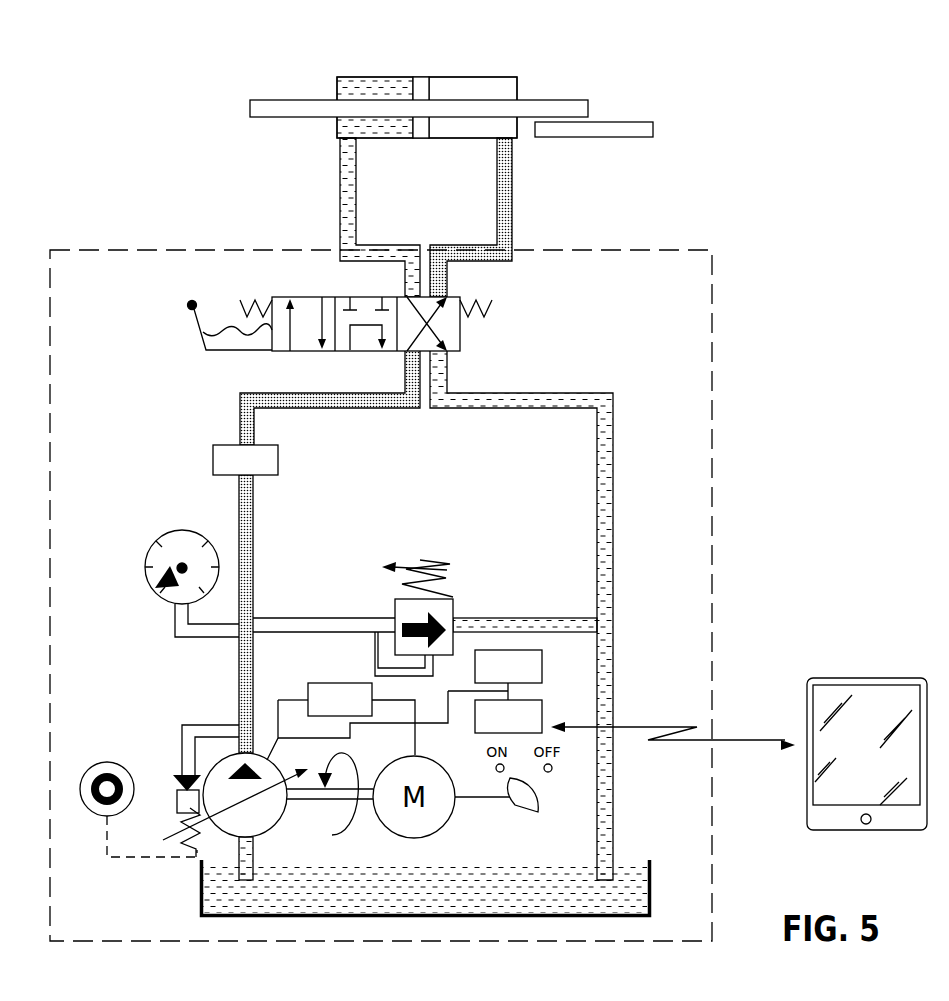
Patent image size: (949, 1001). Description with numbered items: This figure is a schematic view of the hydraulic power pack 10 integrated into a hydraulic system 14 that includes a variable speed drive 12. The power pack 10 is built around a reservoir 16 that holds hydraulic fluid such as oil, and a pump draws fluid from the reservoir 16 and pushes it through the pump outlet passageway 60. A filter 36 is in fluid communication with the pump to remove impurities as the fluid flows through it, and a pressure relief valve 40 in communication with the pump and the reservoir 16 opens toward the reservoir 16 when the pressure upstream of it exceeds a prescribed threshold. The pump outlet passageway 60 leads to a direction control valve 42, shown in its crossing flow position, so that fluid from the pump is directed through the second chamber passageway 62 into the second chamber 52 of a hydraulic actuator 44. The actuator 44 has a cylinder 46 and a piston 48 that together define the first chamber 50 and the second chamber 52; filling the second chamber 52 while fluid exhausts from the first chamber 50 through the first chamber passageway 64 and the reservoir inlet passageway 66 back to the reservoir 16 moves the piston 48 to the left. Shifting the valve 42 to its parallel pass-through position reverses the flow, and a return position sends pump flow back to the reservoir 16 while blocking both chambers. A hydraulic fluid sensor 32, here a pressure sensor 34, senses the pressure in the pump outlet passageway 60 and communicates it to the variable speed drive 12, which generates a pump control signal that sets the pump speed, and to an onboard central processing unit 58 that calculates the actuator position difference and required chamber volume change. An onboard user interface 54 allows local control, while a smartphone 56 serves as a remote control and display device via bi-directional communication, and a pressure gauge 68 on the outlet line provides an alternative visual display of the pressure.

The hydraulic power pack 10 is at (675, 247).
The variable speed drive 12 is at (337, 683).
The hydraulic system 14 is at (112, 108).
The reservoir 16 is at (437, 900).
The hydraulic fluid sensor 32 is at (130, 780).
The pressure sensor 34 is at (107, 762).
The filter 36 is at (213, 459).
The pressure relief valve 40 is at (466, 592).
The direction control valve 42 is at (478, 333).
The hydraulic actuator 44 is at (451, 78).
The cylinder 46 is at (386, 77).
The piston 48 is at (423, 77).
The first chamber 50 is at (358, 87).
The second chamber 52 is at (502, 87).
The onboard user interface 54 is at (544, 705).
The smartphone 56 is at (862, 678).
The central processing unit 58 is at (544, 665).
The pump outlet passageway 60 is at (239, 679).
The second chamber passageway 62 is at (512, 191).
The first chamber passageway 64 is at (340, 192).
The reservoir inlet passageway 66 is at (613, 468).
The pressure gauge 68 is at (157, 543).